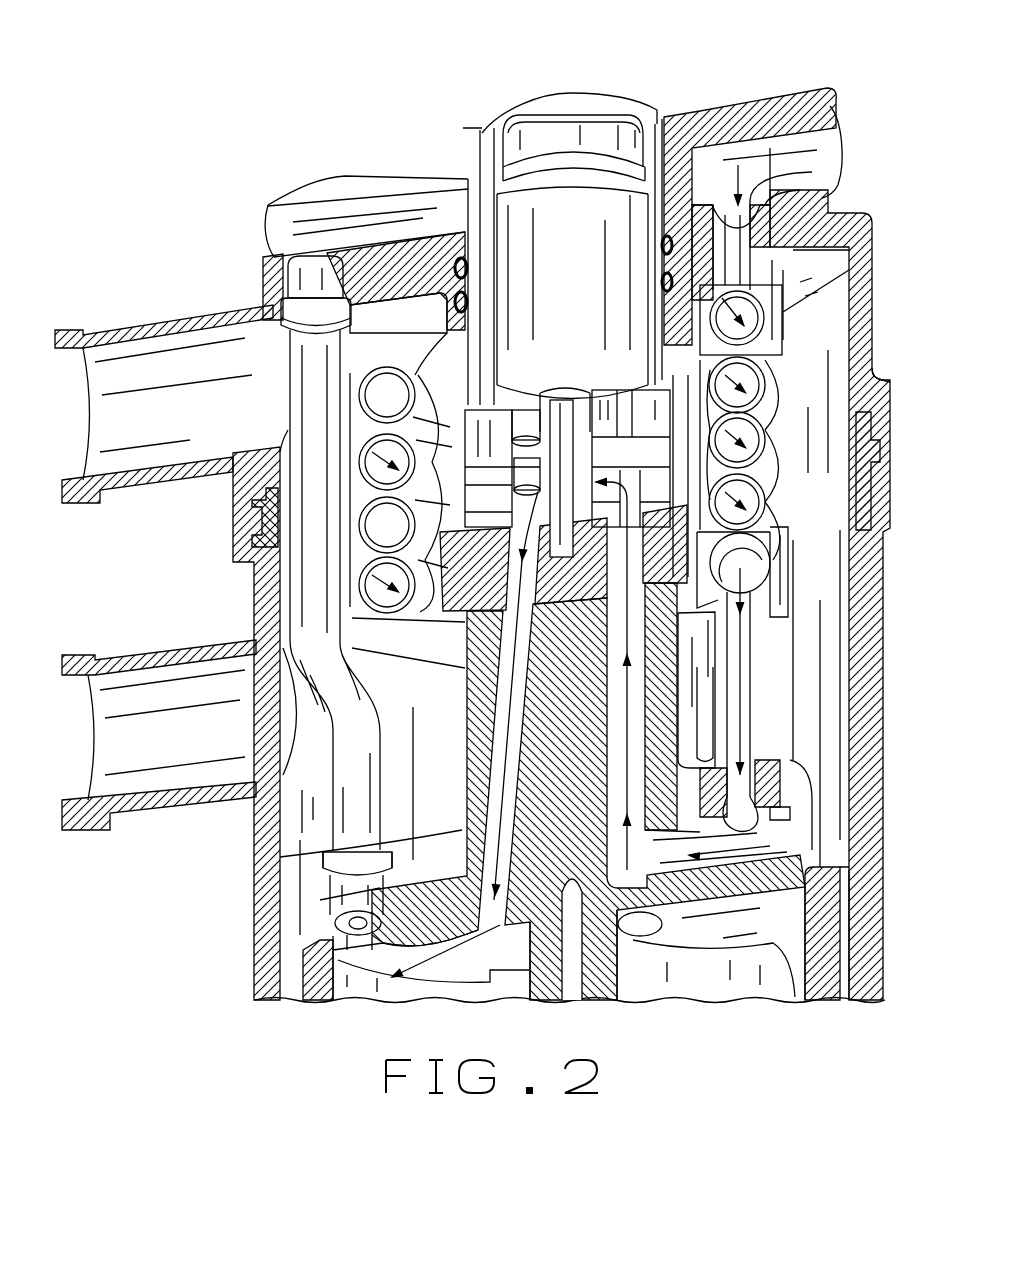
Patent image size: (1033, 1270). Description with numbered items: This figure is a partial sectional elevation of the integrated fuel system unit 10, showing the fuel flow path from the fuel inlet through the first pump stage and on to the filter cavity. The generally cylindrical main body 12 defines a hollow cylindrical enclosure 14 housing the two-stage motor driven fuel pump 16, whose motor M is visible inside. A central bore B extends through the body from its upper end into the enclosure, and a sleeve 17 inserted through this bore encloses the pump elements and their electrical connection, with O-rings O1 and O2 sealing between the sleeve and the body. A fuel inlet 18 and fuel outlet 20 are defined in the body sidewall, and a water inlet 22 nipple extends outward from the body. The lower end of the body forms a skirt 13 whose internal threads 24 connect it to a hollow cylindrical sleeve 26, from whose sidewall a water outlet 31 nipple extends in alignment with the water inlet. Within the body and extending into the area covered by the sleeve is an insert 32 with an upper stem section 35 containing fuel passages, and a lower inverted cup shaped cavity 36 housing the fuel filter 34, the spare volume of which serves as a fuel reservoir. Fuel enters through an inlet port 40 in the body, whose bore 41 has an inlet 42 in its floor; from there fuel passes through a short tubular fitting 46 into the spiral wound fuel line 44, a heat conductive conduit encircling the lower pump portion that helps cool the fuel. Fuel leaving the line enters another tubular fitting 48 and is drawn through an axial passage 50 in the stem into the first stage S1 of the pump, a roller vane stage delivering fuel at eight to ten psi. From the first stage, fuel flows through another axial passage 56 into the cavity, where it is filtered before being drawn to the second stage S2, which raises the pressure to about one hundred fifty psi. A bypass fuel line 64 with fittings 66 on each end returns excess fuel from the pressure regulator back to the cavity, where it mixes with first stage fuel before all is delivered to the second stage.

The integrated fuel system unit 10 is at (257, 110).
The main body 12 is at (868, 318).
The skirt 13 is at (892, 397).
The cylindrical enclosure 14 is at (820, 397).
The fuel pump 16 is at (490, 211).
The sleeve 17 is at (690, 130).
The fuel inlet 18 is at (760, 122).
The fuel outlet 20 is at (300, 205).
The water inlet 22 is at (83, 420).
The internal threads 24 is at (880, 462).
The sleeve 26 is at (888, 858).
The water outlet 31 is at (87, 755).
The insert 32 is at (460, 785).
The fuel filter 34 is at (697, 1002).
The upper stem section 35 is at (463, 670).
The cavity 36 is at (312, 975).
The inlet port 40 is at (842, 149).
The bore 41 is at (717, 186).
The inlet 42 is at (834, 168).
The spiral wound fuel line 44 is at (797, 486).
The tubular fitting 46 is at (790, 290).
The tubular fitting 48 is at (759, 650).
The passage 50 is at (643, 701).
The axial passage 56 is at (328, 866).
The bypass fuel line 64 is at (288, 403).
The fittings 66 is at (285, 262).
The central bore B is at (437, 343).
The motor M is at (562, 265).
The O-ring O1 is at (440, 330).
The O-ring O2 is at (413, 312).
The first stage S1 is at (402, 517).
The second stage S2 is at (400, 400).